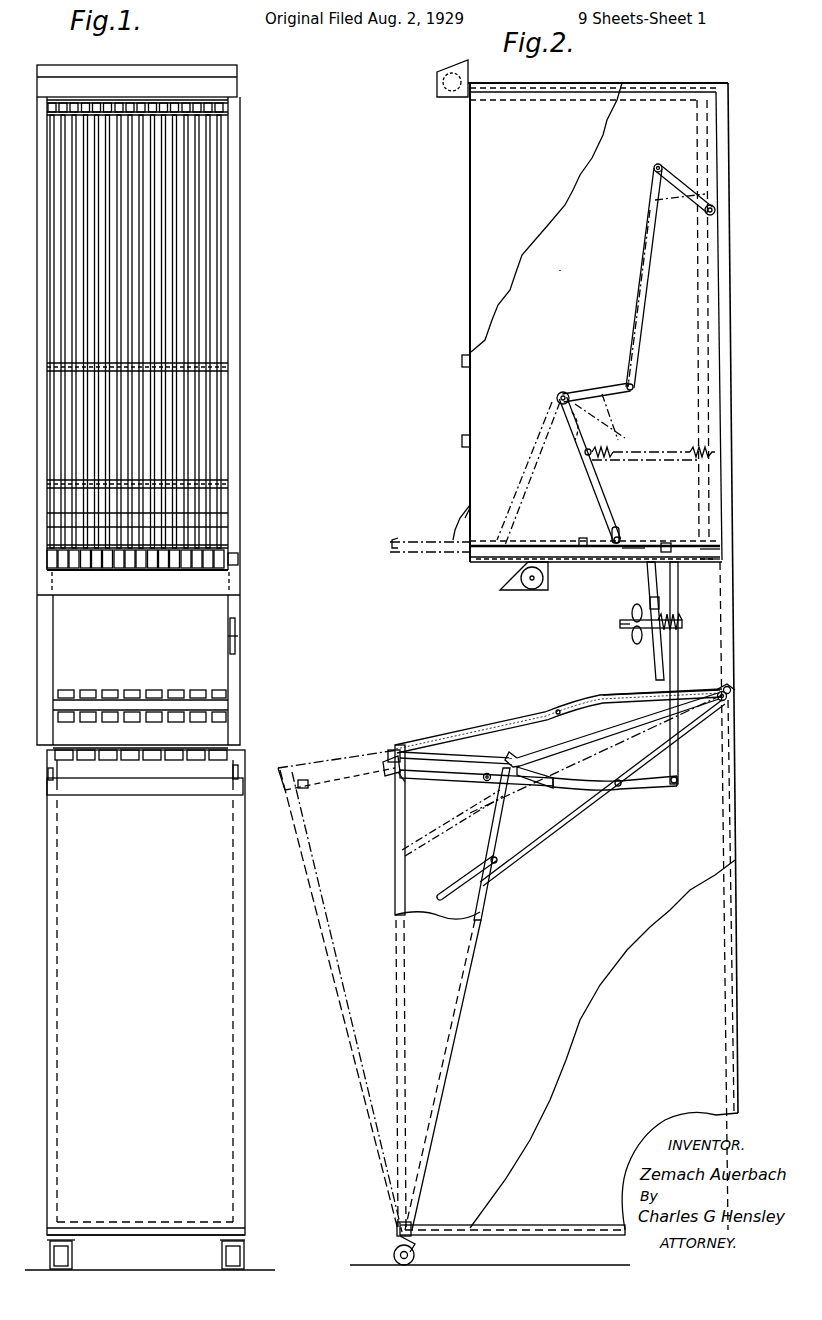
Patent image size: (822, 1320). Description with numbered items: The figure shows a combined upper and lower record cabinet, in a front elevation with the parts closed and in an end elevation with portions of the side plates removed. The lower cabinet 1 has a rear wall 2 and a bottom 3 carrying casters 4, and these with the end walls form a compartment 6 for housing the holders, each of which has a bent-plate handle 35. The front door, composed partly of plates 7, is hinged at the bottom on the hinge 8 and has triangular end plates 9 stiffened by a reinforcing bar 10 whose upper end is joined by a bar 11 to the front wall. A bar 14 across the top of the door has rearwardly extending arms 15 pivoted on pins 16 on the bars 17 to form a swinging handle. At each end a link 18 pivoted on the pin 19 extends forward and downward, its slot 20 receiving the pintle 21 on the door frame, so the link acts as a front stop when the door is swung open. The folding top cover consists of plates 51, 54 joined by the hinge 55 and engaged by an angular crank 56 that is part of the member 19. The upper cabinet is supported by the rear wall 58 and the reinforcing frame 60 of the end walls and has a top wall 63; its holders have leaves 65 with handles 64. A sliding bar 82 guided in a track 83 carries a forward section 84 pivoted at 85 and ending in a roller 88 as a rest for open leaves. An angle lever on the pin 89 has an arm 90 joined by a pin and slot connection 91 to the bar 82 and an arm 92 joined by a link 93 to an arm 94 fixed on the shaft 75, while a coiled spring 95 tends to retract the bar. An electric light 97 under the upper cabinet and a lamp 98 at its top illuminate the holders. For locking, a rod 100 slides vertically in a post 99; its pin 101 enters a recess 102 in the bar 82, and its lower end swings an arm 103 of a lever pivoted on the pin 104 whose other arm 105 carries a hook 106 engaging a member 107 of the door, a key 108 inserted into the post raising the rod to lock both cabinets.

In FIG. 2, the lower cabinet 1 is at (615, 656).
In FIG. 2, the rear wall 2 is at (736, 970).
In FIG. 1, the bottom 3 is at (137, 1242).
In FIG. 2, the bottom 3 is at (486, 1240).
In FIG. 1, the casters 4 is at (64, 1260).
In FIG. 2, the casters 4 is at (392, 1255).
In FIG. 2, the compartment 6 is at (602, 1044).
In FIG. 1, the plates 7 is at (146, 992).
In FIG. 2, the plates 7 is at (392, 918).
In FIG. 2, the hinge 8 is at (396, 1229).
In FIG. 2, the end plates 9 is at (437, 895).
In FIG. 2, the reinforcing bar 10 is at (485, 897).
In FIG. 2, the bar 11 is at (484, 762).
In FIG. 1, the bar 14 is at (171, 787).
In FIG. 2, the bar 14 is at (384, 790).
In FIG. 2, the arms 15 is at (392, 812).
In FIG. 2, the pins 16 is at (410, 780).
In FIG. 2, the bars 17 is at (456, 786).
In FIG. 2, the link 18 is at (621, 742).
In FIG. 2, the pin 19 is at (718, 702).
In FIG. 2, the slot 20 is at (457, 886).
In FIG. 2, the pintle 21 is at (498, 864).
In FIG. 1, the handle 35 is at (218, 753).
In FIG. 2, the top cover plate 51 is at (605, 705).
In FIG. 2, the top cover plate 54 is at (473, 736).
In FIG. 2, the hinge 55 is at (557, 710).
In FIG. 2, the angular crank 56 is at (718, 689).
In FIG. 2, the rear wall 58 is at (733, 325).
In FIG. 1, the reinforcing frame 60 is at (243, 674).
In FIG. 2, the reinforcing frame 60 is at (648, 593).
In FIG. 1, the top wall 63 is at (163, 77).
In FIG. 2, the top wall 63 is at (651, 84).
In FIG. 1, the handles 64 is at (235, 565).
In FIG. 2, the handles 64 is at (456, 522).
In FIG. 1, the leaves 65 is at (195, 447).
In FIG. 2, the leaves 65 is at (552, 261).
In FIG. 2, the pin 75 is at (714, 209).
In FIG. 2, the sliding bar 82 is at (633, 547).
In FIG. 2, the track 83 is at (665, 543).
In FIG. 2, the forward bar section 84 is at (546, 545).
In FIG. 2, the pivot 85 is at (583, 538).
In FIG. 2, the roller 88 is at (392, 561).
In FIG. 2, the pin 89 is at (562, 393).
In FIG. 2, the arm 90 is at (586, 477).
In FIG. 2, the pin and slot connection 91 is at (619, 528).
In FIG. 2, the arm 92 is at (597, 390).
In FIG. 2, the link 93 is at (637, 300).
In FIG. 2, the arm 94 is at (675, 170).
In FIG. 2, the coiled spring 95 is at (657, 451).
In FIG. 2, the electric light 97 is at (534, 580).
In FIG. 2, the lamp 98 is at (452, 85).
In FIG. 2, the post 99 is at (684, 628).
In FIG. 2, the rod 100 is at (679, 586).
In FIG. 2, the pin 101 is at (722, 559).
In FIG. 2, the recess 102 is at (716, 549).
In FIG. 2, the arm 103 is at (652, 786).
In FIG. 2, the pin 104 is at (617, 787).
In FIG. 2, the arm 105 is at (567, 756).
In FIG. 2, the hook 106 is at (530, 755).
In FIG. 2, the member 107 is at (553, 784).
In FIG. 1, the key 108 is at (240, 625).
In FIG. 2, the key 108 is at (623, 625).